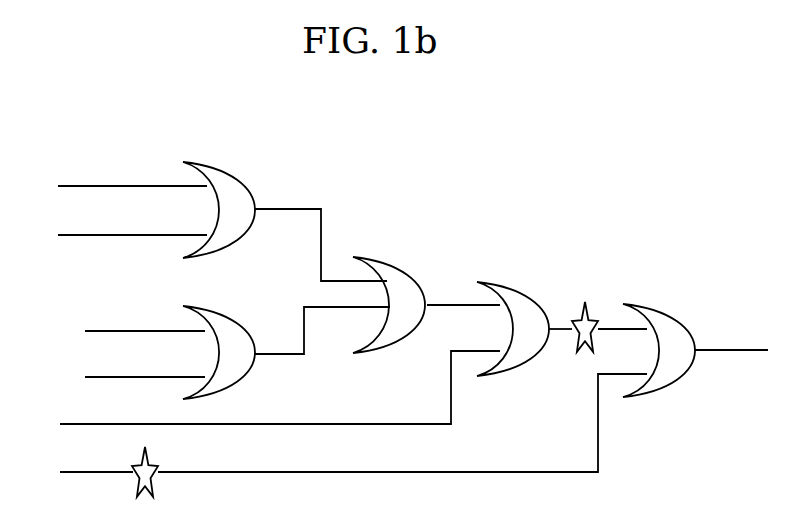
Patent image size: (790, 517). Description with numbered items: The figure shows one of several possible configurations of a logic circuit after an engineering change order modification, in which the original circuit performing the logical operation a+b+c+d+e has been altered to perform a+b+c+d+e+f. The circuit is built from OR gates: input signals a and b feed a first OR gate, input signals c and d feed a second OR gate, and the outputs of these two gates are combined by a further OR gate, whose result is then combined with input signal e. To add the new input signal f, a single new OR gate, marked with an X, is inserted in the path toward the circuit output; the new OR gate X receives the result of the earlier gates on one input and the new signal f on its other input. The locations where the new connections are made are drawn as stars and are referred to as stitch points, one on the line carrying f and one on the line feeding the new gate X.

The input signal a is at (118, 189).
The input signal b is at (118, 237).
The input signal c is at (117, 333).
The input signal d is at (117, 378).
The input signal e is at (265, 394).
The input signal f is at (338, 435).
The new OR gate X is at (718, 347).